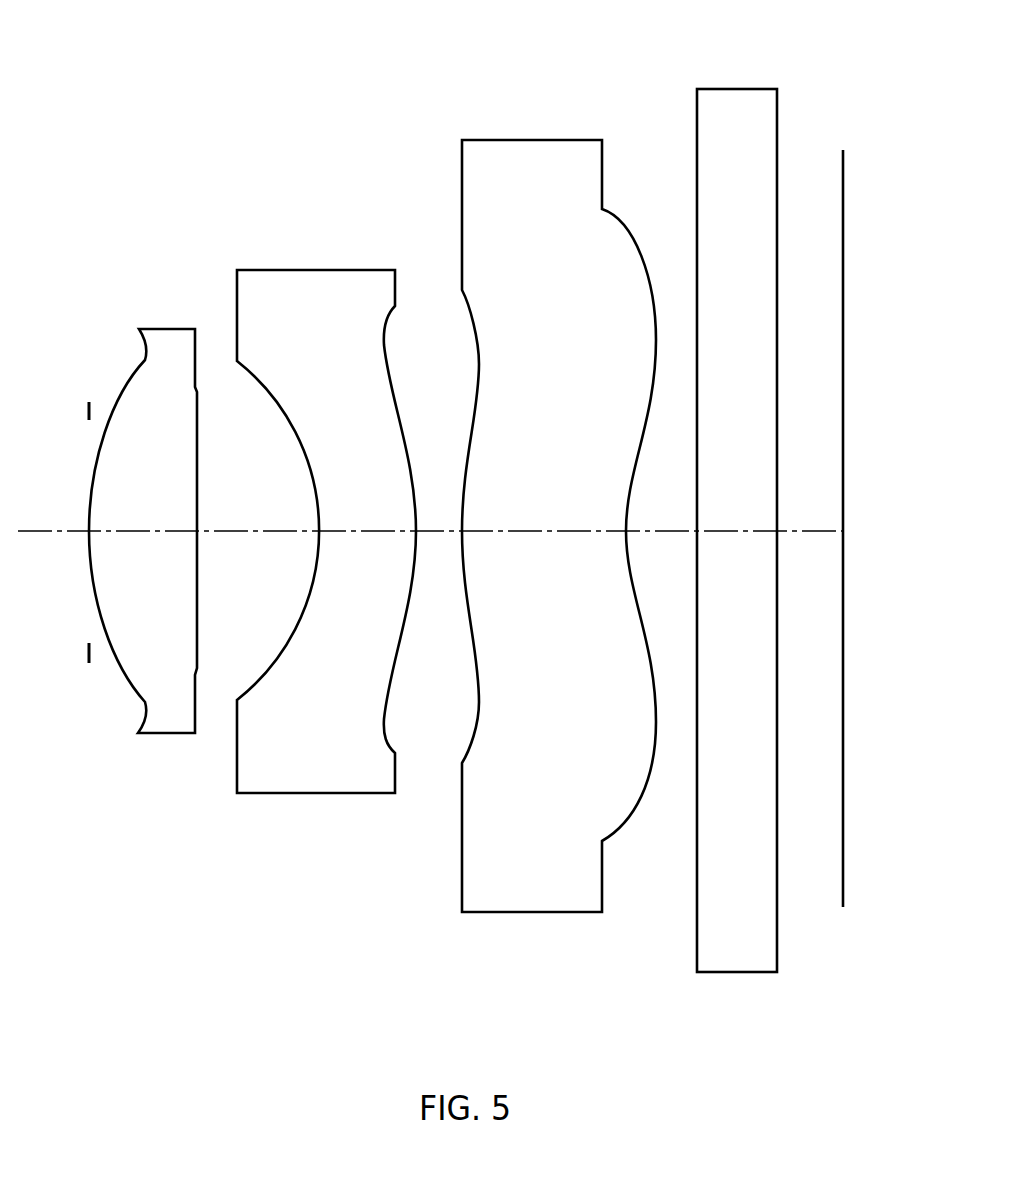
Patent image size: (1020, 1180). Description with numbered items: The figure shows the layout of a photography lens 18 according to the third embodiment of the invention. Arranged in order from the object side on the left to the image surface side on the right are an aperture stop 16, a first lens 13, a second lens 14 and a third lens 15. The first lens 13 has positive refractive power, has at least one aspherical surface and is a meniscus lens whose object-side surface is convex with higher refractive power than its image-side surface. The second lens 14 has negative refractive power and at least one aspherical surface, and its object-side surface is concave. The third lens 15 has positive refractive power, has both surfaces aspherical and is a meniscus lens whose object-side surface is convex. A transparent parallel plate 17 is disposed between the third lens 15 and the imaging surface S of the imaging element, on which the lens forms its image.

The first lens 13 is at (167, 329).
The second lens 14 is at (314, 270).
The third lens 15 is at (527, 140).
The aperture stop 16 is at (88, 402).
The transparent parallel plate 17 is at (737, 89).
The photography lens 18 is at (390, 135).
The imaging surface S is at (846, 258).